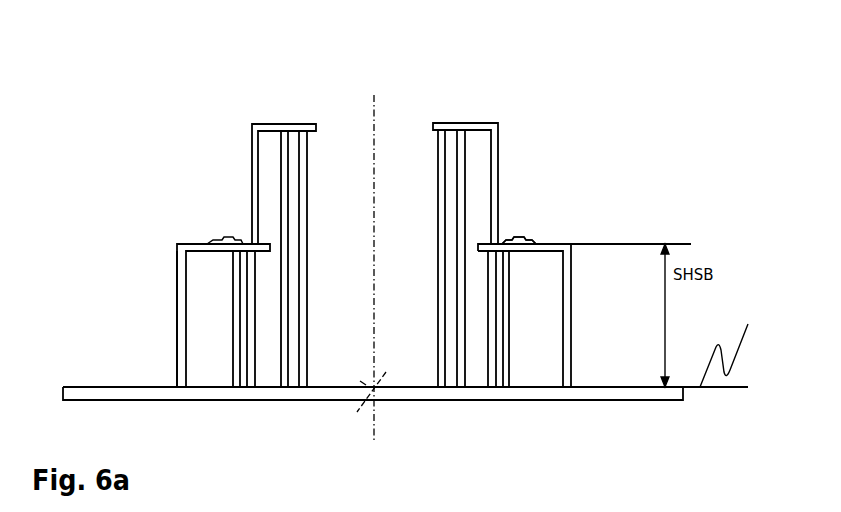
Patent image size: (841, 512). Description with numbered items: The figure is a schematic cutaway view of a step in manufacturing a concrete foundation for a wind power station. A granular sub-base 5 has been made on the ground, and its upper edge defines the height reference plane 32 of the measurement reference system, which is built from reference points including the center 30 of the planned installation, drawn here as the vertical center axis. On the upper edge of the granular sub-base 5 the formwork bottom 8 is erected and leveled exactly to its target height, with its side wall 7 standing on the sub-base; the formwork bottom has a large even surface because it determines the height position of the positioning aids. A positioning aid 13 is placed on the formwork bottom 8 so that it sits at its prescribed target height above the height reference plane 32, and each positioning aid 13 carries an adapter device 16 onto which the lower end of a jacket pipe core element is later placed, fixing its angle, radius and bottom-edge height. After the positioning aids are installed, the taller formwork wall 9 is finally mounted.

The granular sub-base 5 is at (163, 390).
The side wall of lower structure 7 is at (187, 283).
The formwork bottom 8 is at (198, 248).
The formwork wall 9 is at (253, 143).
The positioning aid 13 is at (222, 238).
The adapter device 16 is at (520, 235).
The center 30 is at (373, 388).
The height reference plane 32 is at (734, 341).